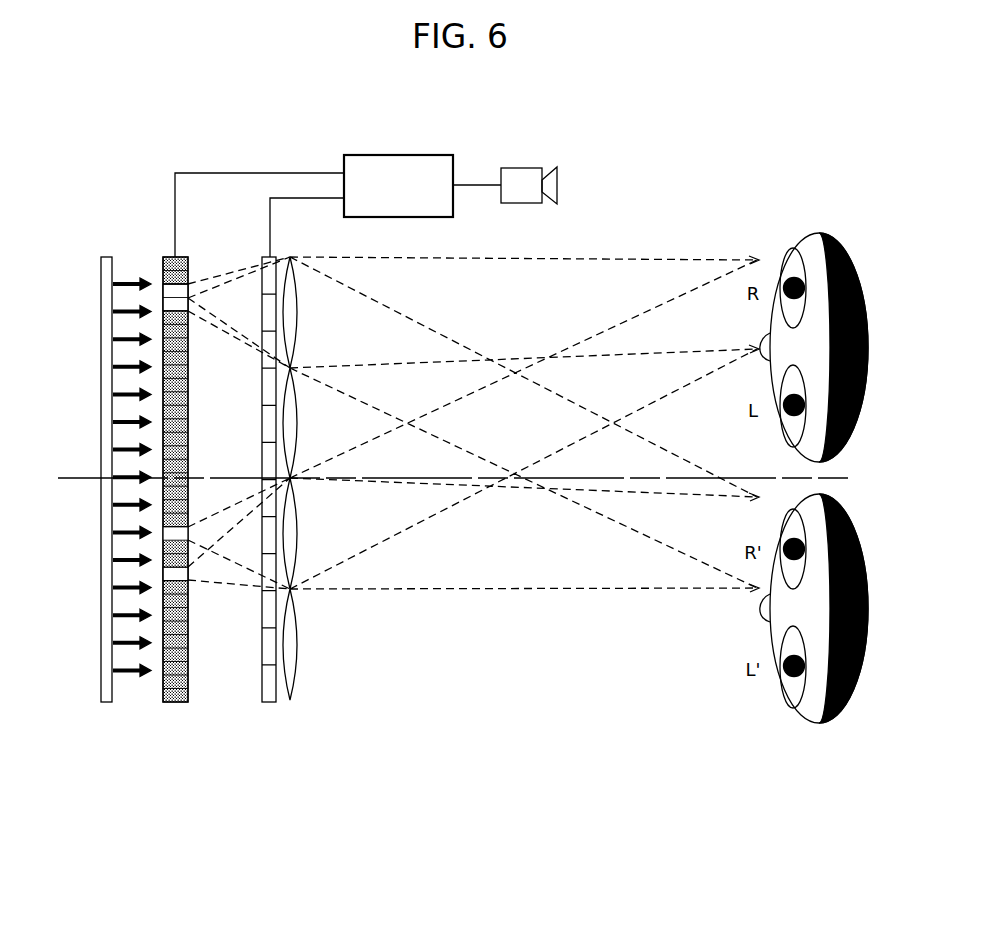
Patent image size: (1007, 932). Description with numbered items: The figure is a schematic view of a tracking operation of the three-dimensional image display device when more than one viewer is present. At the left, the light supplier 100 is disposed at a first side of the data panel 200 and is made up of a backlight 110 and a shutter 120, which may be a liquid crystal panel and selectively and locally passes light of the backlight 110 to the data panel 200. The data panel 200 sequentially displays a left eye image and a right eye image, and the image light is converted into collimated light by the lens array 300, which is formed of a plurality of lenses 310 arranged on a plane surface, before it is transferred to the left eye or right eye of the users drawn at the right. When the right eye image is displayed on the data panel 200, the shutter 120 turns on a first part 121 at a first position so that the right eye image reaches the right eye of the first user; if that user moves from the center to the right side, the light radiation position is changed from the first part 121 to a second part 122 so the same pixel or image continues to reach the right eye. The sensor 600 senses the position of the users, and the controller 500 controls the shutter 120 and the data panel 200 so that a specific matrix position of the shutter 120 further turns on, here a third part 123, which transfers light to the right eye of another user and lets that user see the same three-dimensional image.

The light supplier 100 is at (195, 492).
The backlight 110 is at (106, 703).
The shutter 120 is at (175, 703).
The first part 121 is at (186, 298).
The second part 122 is at (185, 311).
The third part 123 is at (185, 289).
The data panel 200 is at (270, 703).
The lens array 300 is at (335, 500).
The lens 310 is at (292, 684).
The controller 500 is at (397, 155).
The sensor 600 is at (522, 168).